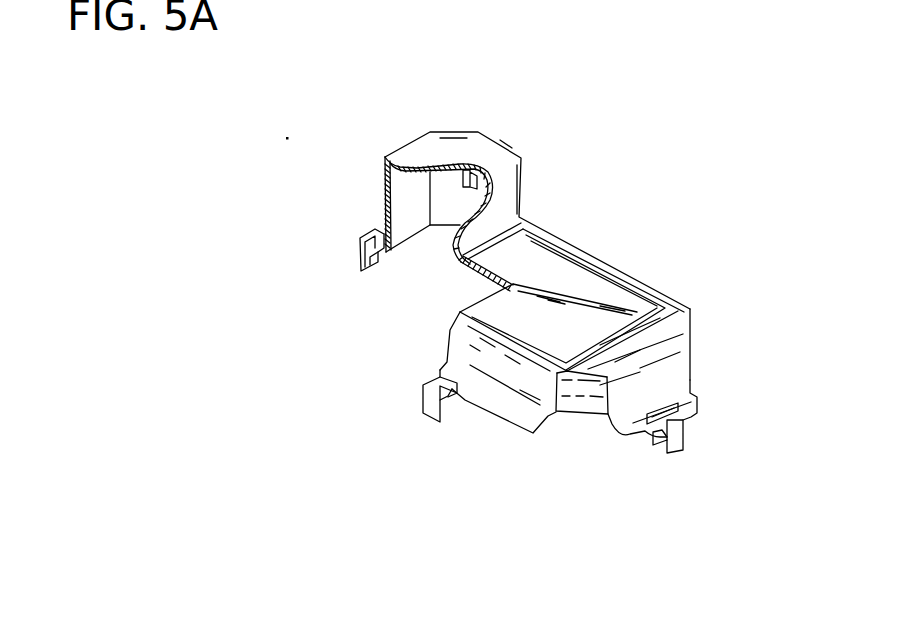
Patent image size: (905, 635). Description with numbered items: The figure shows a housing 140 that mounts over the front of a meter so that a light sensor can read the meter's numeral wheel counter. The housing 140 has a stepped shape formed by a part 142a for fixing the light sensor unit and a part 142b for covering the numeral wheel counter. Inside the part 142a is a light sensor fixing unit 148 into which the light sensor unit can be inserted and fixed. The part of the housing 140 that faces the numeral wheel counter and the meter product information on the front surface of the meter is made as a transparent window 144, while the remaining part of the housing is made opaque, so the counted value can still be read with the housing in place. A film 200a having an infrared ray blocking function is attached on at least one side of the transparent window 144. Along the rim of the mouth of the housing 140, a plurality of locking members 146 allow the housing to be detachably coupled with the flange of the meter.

The housing 140 is at (641, 262).
The part for fixing the light sensor unit 142a is at (490, 141).
The part for covering the numeral wheel counter 142b is at (682, 312).
The transparent window 144 is at (522, 265).
The locking member 146 is at (681, 441).
The light sensor fixing unit 148 is at (463, 181).
The film having an infrared ray blocking function 200a is at (458, 268).